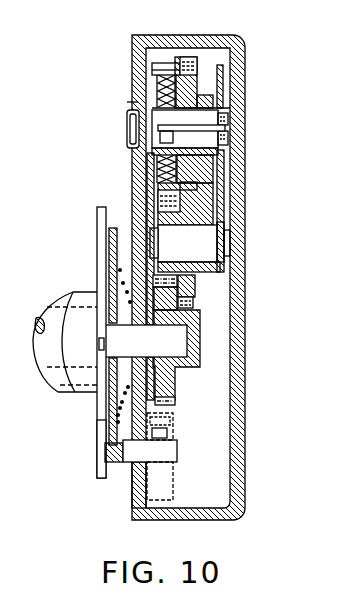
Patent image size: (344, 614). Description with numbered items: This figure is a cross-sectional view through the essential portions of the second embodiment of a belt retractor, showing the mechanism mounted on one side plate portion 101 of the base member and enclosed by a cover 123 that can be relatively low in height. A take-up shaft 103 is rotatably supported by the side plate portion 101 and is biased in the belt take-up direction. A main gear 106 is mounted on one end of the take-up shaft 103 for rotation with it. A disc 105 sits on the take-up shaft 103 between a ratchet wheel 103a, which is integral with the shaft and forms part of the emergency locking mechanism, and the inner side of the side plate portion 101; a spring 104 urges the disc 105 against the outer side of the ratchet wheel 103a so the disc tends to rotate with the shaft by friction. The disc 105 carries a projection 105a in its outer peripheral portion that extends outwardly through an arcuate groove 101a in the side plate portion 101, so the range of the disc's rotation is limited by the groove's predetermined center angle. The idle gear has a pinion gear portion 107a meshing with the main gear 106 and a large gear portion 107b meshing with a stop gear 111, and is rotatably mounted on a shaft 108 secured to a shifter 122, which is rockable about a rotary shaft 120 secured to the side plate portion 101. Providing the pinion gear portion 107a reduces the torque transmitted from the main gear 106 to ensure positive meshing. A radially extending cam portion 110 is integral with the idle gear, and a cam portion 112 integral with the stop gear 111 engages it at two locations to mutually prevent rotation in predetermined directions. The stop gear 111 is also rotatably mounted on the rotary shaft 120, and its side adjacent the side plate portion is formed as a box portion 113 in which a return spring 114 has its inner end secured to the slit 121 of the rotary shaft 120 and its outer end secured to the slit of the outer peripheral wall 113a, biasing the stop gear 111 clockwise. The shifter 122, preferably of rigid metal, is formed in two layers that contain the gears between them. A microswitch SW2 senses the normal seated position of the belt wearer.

The side plate portion 101 is at (131, 497).
The arcuate groove 101a is at (135, 461).
The take-up shaft 103 is at (47, 314).
The ratchet wheel 103a is at (95, 428).
The spring 104 is at (108, 407).
The disc 105 is at (107, 228).
The projection 105a is at (173, 450).
The main gear 106 is at (173, 383).
The pinion gear portion 107a is at (173, 277).
The large gear portion 107b is at (195, 293).
The shaft 108 is at (210, 240).
The cam portion 110 is at (212, 194).
The stop gear 111 is at (187, 60).
The cam portion 112 is at (210, 183).
The box portion 113 is at (158, 153).
The outer peripheral wall 113a is at (158, 70).
The return spring 114 is at (140, 108).
The rotary shaft 120 is at (207, 117).
The slit 121 is at (226, 132).
The shifter 122 is at (152, 53).
The cover 123 is at (245, 52).
The microswitch SW2 is at (202, 489).